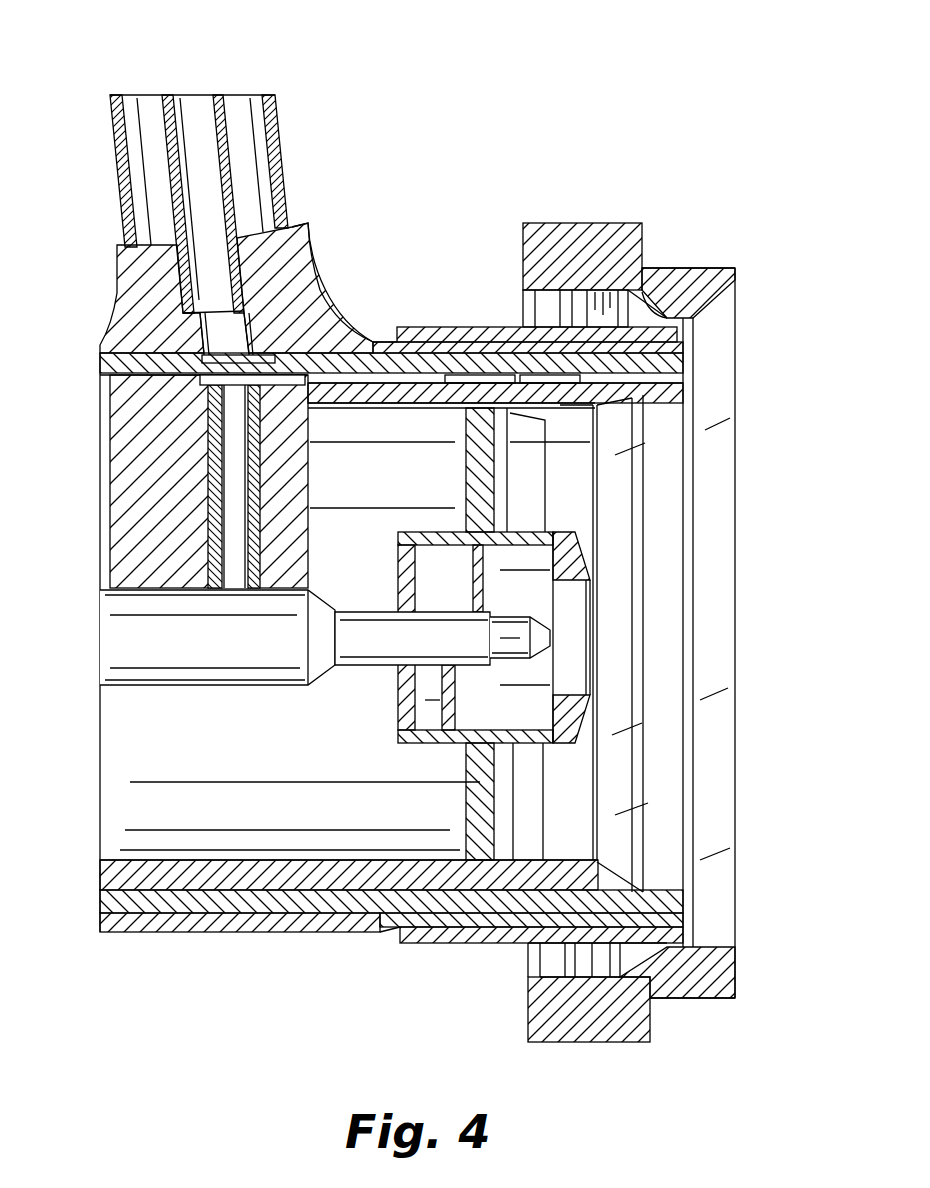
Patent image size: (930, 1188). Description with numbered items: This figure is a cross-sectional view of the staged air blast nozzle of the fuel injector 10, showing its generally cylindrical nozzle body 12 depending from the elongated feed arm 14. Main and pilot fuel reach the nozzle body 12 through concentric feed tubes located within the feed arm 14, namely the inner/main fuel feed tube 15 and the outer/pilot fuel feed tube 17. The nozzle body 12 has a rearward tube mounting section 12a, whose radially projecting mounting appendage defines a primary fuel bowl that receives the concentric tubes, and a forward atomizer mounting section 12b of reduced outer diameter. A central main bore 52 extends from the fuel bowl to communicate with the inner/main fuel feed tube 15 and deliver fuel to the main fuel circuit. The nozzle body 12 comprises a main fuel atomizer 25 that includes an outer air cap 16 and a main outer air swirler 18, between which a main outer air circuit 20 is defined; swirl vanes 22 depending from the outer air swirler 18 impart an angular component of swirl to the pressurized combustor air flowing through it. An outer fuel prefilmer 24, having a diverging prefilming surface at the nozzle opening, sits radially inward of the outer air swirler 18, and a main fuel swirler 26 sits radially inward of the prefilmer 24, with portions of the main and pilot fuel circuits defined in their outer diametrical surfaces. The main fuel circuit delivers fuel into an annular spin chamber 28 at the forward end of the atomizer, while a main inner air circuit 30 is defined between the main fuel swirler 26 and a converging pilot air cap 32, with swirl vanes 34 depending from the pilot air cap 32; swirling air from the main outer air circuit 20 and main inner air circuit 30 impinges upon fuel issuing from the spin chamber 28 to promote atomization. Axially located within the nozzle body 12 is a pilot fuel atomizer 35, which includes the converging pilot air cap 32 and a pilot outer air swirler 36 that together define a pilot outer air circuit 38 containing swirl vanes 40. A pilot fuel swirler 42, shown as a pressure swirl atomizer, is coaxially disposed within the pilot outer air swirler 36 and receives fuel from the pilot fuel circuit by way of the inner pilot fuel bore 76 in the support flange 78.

The fuel injector 10 is at (713, 132).
The nozzle body 12 is at (324, 257).
The rearward tube mounting section 12a is at (310, 222).
The forward atomizer mounting section 12b is at (390, 337).
The feed arm 14 is at (113, 167).
The inner/main fuel feed tube 15 is at (203, 125).
The outer air cap 16 is at (590, 224).
The outer/pilot fuel feed tube 17 is at (148, 110).
The main outer air swirler 18 is at (442, 330).
The main outer air circuit 20 is at (643, 305).
The swirl vanes 22 is at (523, 290).
The outer fuel prefilmer 24 is at (636, 375).
The main fuel atomizer 25 is at (739, 282).
The main fuel swirler 26 is at (620, 418).
The annular spin chamber 28 is at (520, 362).
The main inner air circuit 30 is at (408, 432).
The converging pilot air cap 32 is at (588, 580).
The swirl vanes 34 is at (466, 823).
The pilot fuel atomizer 35 is at (587, 740).
The pilot outer air swirler 36 is at (358, 645).
The pilot outer air circuit 38 is at (501, 702).
The swirl vanes 40 is at (437, 578).
The pilot fuel swirler 42 is at (191, 688).
The central main bore 52 is at (110, 298).
The inner pilot fuel bore 76 is at (235, 457).
The support flange 78 is at (125, 428).